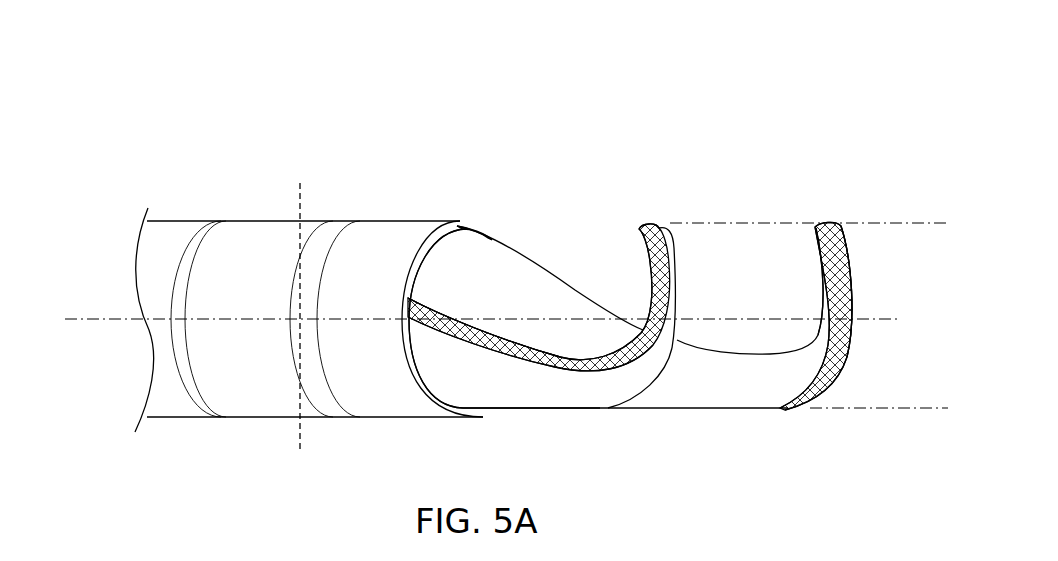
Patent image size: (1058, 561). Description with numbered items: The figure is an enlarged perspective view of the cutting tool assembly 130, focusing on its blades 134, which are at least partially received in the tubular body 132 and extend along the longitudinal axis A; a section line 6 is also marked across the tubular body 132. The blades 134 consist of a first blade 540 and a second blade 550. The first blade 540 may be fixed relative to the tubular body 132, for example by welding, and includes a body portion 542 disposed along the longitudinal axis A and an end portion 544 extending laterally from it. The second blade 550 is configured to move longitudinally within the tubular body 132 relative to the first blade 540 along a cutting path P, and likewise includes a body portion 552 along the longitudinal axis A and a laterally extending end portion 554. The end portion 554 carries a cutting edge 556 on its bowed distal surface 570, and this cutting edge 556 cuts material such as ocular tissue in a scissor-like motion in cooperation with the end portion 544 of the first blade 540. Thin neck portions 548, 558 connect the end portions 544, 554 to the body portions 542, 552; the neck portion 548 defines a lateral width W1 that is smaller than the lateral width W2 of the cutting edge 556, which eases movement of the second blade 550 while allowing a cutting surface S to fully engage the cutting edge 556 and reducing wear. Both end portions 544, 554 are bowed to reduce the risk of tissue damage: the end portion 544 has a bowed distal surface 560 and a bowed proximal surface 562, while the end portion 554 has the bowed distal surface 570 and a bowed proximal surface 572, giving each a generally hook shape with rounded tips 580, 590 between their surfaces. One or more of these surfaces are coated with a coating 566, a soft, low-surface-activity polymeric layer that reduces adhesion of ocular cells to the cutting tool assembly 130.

The cutting tool assembly 130 is at (627, 80).
The tubular body 132 is at (172, 221).
The blades 134 is at (712, 102).
The section line 6 is at (300, 183).
The first blade 540 is at (716, 413).
The body portion 542 is at (437, 282).
The end portion 544 is at (810, 350).
The neck portion 548 is at (693, 360).
The second blade 550 is at (543, 413).
The body portion 552 is at (428, 337).
The end portion 554 is at (641, 325).
The cutting edge 556 is at (677, 290).
The neck portion 558 is at (481, 368).
The bowed distal surface 560 is at (860, 250).
The bowed proximal surface 562 is at (817, 263).
The coating 566 is at (533, 344).
The bowed distal surface 570 is at (678, 253).
The bowed proximal surface 572 is at (642, 260).
The rounded tip 580 is at (823, 226).
The rounded tip 590 is at (651, 224).
The cutting surface S is at (840, 300).
The cutting path P is at (490, 388).
The lateral width of neck portion W1 is at (758, 357).
The lateral width of cutting edge W2 is at (932, 225).
The longitudinal axis A is at (471, 319).